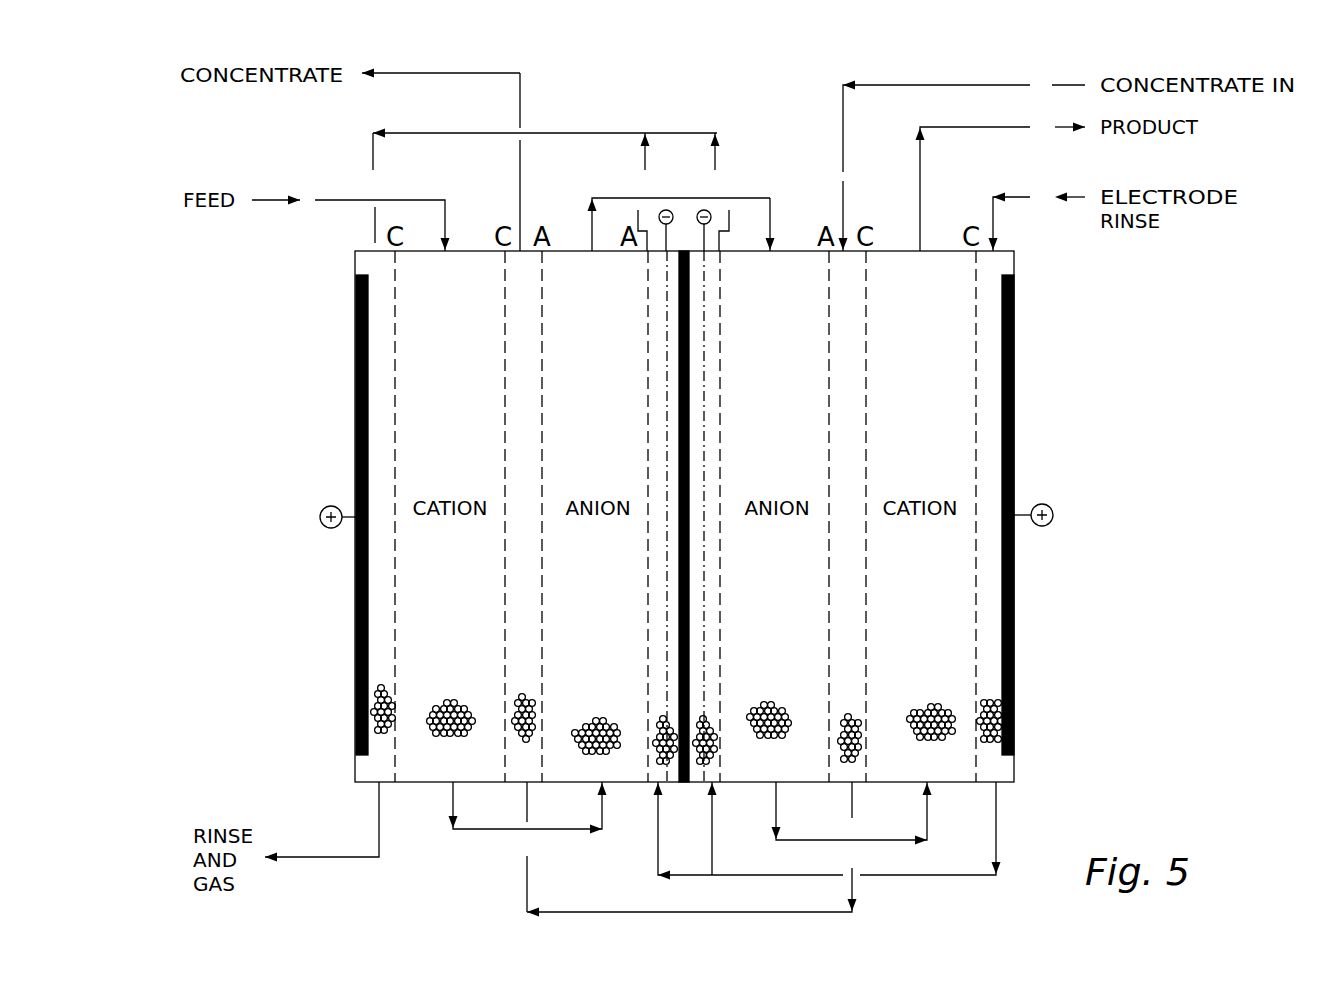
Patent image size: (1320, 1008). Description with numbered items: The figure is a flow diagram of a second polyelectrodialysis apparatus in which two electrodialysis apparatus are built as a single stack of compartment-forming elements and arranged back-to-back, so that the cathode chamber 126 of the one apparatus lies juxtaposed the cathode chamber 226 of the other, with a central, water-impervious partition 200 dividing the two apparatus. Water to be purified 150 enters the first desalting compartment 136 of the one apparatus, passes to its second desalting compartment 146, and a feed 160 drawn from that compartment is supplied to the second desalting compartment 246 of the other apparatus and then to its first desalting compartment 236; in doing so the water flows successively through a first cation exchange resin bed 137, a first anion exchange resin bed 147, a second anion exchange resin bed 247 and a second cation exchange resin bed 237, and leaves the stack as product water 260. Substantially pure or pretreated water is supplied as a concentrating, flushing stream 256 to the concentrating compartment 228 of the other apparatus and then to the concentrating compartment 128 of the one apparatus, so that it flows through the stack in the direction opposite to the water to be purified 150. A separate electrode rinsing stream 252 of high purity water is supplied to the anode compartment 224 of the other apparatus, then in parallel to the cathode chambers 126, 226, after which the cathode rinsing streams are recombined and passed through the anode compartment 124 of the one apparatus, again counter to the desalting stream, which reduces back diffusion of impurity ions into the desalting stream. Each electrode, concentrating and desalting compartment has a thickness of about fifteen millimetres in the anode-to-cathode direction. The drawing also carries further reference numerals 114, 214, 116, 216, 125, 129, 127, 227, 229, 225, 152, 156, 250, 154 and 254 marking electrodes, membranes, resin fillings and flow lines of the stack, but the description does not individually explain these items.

The anode electrode 114 is at (360, 375).
The cathode electrode 214 is at (1010, 400).
The central water-impervious partition 200 is at (683, 375).
The anode compartment 124 is at (375, 562).
The anode compartment 224 is at (993, 440).
The membrane 116 is at (665, 425).
The cathode chamber 126 is at (667, 658).
The membrane 216 is at (703, 612).
The cathode chamber 226 is at (708, 418).
The concentrating compartment 128 is at (517, 595).
The concentrating compartment 228 is at (848, 477).
The first desalting compartment 136 is at (425, 638).
The second desalting compartment 146 is at (575, 638).
The second desalting compartment 246 is at (752, 638).
The first desalting compartment 236 is at (895, 638).
The ion exchange resin beads 125 is at (375, 705).
The first cation exchange resin bed 137 is at (430, 725).
The ion exchange resin beads 129 is at (530, 703).
The first anion exchange resin bed 147 is at (605, 752).
The ion exchange resin beads 127 is at (667, 770).
The ion exchange resin beads 227 is at (713, 767).
The second anion exchange resin bed 247 is at (782, 737).
The ion exchange resin beads 229 is at (863, 758).
The second cation exchange resin bed 237 is at (930, 740).
The ion exchange resin beads 225 is at (1002, 715).
The water to be purified 150 is at (343, 198).
The concentrate recirculation line 152 is at (377, 168).
The concentrate outlet line 156 is at (520, 190).
The feed 160 is at (591, 226).
The inlet line 250 is at (776, 230).
The concentrating, flushing stream 256 is at (843, 177).
The product water 260 is at (920, 192).
The electrode rinsing stream 252 is at (993, 213).
The transfer line 154 is at (658, 852).
The transfer line 254 is at (712, 845).